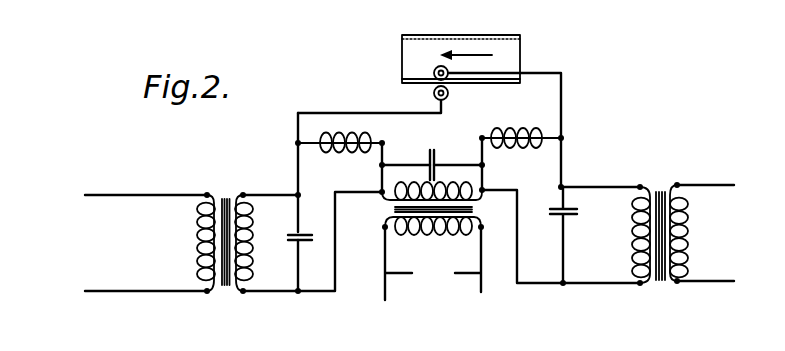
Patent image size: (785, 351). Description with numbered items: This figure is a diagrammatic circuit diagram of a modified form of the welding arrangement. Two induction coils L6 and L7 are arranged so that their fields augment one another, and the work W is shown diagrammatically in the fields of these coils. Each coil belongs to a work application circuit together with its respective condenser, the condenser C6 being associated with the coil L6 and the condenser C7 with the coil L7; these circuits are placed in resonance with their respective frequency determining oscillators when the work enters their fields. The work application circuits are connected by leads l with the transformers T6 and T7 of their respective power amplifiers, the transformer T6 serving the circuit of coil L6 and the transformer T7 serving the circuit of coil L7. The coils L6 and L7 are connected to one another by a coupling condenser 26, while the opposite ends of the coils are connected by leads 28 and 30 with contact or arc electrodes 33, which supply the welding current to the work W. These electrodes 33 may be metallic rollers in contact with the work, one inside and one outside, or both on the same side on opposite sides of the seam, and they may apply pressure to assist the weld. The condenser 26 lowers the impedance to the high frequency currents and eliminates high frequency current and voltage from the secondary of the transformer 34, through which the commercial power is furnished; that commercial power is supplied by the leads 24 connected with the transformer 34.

The leads l is at (286, 294).
The transformer T7 is at (227, 293).
The condenser C7 is at (278, 240).
The induction coil L7 is at (318, 147).
The lead 30 is at (351, 112).
The contact or arc electrodes 33 is at (433, 72).
The work W is at (413, 48).
The lead 28 is at (562, 72).
The induction coil L6 is at (533, 113).
The coupling condenser 26 is at (438, 150).
The transformer 34 is at (393, 212).
The leads 24 is at (433, 263).
The condenser C6 is at (588, 200).
The transformer T6 is at (674, 170).